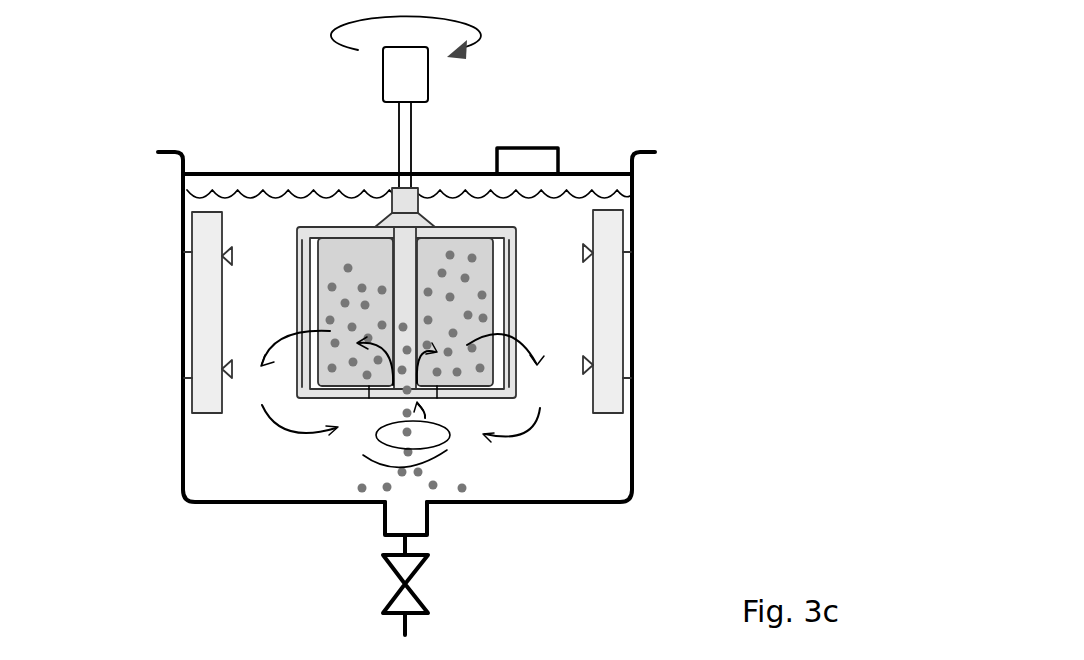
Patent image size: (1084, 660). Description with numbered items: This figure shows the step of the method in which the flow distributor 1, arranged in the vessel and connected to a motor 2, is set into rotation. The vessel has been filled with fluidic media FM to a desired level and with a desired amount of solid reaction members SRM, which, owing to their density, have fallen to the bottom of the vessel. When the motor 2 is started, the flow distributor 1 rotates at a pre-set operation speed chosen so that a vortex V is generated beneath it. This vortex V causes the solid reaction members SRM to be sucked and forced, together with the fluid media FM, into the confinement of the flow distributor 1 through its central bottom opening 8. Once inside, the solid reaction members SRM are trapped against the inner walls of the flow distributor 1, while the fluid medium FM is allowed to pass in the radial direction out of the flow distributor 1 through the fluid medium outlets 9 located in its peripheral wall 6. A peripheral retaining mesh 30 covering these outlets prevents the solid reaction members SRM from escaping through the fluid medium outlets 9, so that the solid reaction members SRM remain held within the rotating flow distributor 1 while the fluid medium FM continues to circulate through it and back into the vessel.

The flow distributor 1 is at (520, 238).
The motor 2 is at (420, 86).
The peripheral wall 6 is at (517, 280).
The central bottom opening 8 is at (382, 392).
The fluid medium outlets 9 is at (517, 307).
The peripheral retaining mesh 30 is at (455, 243).
The fluidic media FM is at (255, 223).
The solid reaction members SRM is at (475, 255).
The vortex V is at (411, 444).